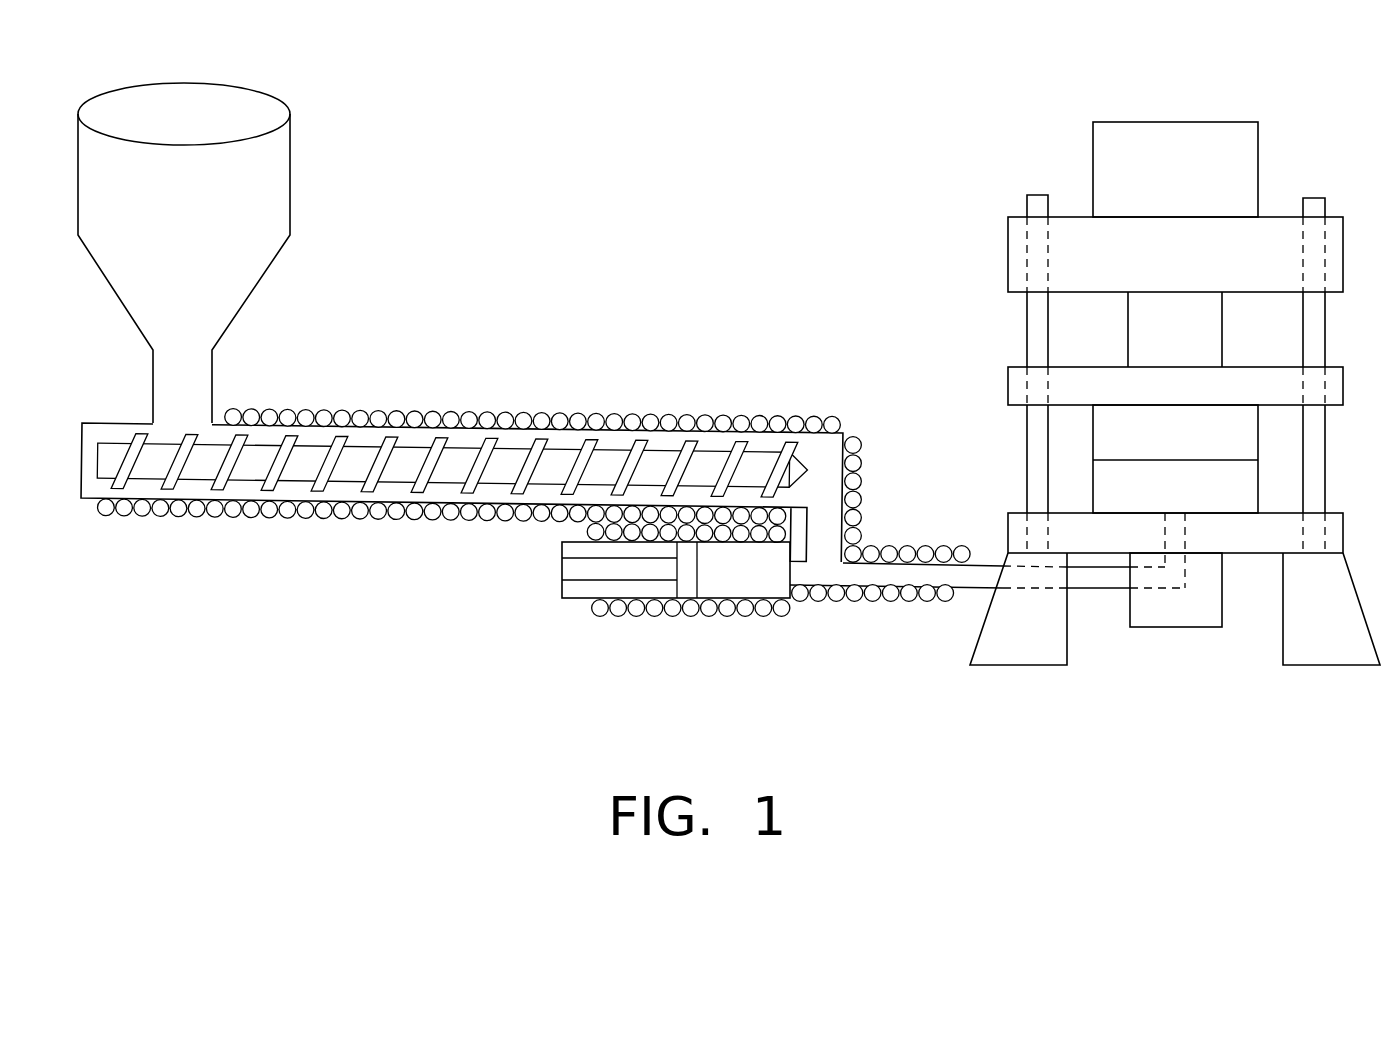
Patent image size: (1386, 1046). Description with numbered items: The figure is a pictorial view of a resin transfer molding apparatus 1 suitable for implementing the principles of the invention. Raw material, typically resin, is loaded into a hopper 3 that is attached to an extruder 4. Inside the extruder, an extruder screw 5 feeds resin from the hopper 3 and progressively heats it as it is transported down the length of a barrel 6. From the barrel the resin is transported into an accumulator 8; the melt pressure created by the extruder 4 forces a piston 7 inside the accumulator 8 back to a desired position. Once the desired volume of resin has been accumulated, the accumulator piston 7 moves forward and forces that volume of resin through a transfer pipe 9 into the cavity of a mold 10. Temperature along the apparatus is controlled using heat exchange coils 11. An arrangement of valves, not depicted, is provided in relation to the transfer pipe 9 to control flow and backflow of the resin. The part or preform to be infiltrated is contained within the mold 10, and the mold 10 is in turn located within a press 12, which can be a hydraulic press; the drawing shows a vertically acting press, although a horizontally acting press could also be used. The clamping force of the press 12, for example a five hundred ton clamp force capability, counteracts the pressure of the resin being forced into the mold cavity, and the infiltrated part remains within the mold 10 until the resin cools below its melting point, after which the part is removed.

The resin transfer molding apparatus 1 is at (532, 692).
The hopper 3 is at (262, 197).
The extruder 4 is at (82, 486).
The extruder screw 5 is at (262, 455).
The barrel 6 is at (470, 436).
The piston 7 is at (685, 572).
The accumulator 8 is at (750, 584).
The transfer pipe 9 is at (832, 567).
The mold 10 is at (1192, 444).
The heat exchange coils 11 is at (185, 518).
The press 12 is at (1192, 267).